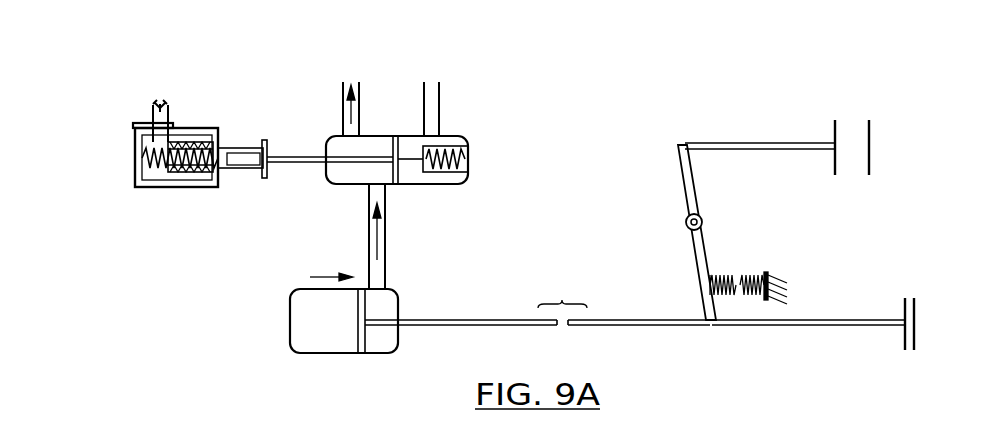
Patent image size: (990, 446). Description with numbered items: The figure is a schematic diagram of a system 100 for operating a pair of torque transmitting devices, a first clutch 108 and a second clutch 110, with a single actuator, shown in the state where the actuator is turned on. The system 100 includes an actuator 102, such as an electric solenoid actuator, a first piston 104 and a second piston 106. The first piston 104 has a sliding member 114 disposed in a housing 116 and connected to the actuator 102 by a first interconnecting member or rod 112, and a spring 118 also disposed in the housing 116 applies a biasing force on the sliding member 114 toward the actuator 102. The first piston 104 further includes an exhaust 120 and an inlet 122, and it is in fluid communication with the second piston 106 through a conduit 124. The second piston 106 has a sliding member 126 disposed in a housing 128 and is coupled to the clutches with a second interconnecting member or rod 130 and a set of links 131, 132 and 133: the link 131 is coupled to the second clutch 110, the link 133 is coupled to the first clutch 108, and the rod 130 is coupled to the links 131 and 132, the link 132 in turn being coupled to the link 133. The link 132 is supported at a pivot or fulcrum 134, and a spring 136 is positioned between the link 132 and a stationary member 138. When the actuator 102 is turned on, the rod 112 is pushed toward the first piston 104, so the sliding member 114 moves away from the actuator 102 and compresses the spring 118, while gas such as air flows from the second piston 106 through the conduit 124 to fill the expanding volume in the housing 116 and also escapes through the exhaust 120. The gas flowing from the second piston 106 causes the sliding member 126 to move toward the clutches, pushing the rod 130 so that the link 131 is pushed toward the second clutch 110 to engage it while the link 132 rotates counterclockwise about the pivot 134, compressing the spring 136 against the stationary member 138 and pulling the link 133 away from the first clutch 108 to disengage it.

The system 100 is at (700, 87).
The actuator 102 is at (135, 150).
The first piston 104 is at (378, 134).
The second piston 106 is at (304, 353).
The first clutch 108 is at (852, 130).
The second clutch 110 is at (910, 302).
The first interconnecting member or rod 112 is at (297, 166).
The sliding member 114 is at (398, 176).
The housing 116 is at (450, 136).
The spring 118 is at (448, 172).
The exhaust 120 is at (341, 95).
The inlet 122 is at (441, 96).
The conduit 124 is at (387, 229).
The sliding member 126 is at (362, 340).
The housing 128 is at (290, 324).
The second interconnecting member or rod 130 is at (537, 298).
The link 131 is at (770, 328).
The link 132 is at (700, 190).
The link 133 is at (768, 142).
The pivot 134 is at (686, 220).
The spring 136 is at (720, 278).
The stationary member 138 is at (765, 272).